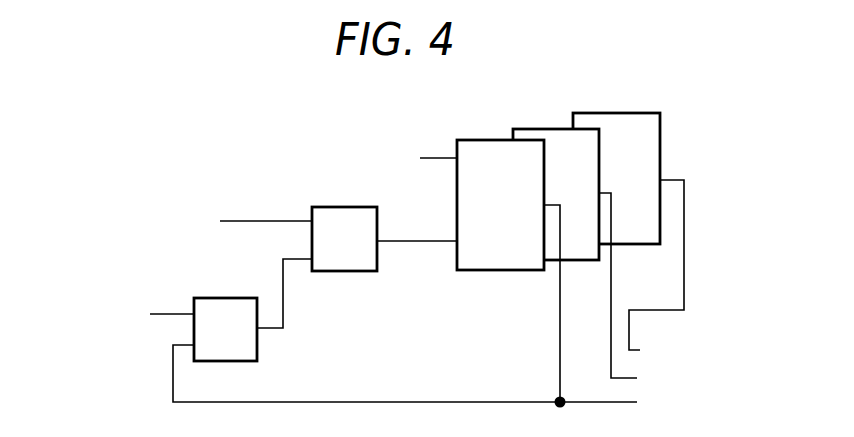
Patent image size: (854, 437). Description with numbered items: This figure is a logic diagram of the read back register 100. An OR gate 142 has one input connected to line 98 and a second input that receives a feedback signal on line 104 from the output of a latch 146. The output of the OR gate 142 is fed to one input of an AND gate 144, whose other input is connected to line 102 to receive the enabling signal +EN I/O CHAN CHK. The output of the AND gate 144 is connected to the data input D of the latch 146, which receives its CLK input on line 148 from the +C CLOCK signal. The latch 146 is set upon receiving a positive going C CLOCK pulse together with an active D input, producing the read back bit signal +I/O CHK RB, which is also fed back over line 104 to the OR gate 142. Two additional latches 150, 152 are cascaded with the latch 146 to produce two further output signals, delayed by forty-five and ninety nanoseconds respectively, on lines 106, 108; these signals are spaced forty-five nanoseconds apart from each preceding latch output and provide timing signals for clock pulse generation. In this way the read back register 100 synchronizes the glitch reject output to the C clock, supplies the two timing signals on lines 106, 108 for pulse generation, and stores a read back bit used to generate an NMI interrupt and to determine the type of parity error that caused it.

The read back register 100 is at (304, 129).
The line 102 is at (281, 220).
The line 98 is at (172, 312).
The OR gate 142 is at (247, 297).
The AND gate 144 is at (332, 271).
The latch 146 is at (476, 139).
The line 148 is at (437, 158).
The latch 150 is at (555, 128).
The latch 152 is at (645, 113).
The line 104 is at (556, 340).
The line 106 is at (613, 297).
The line 108 is at (693, 210).